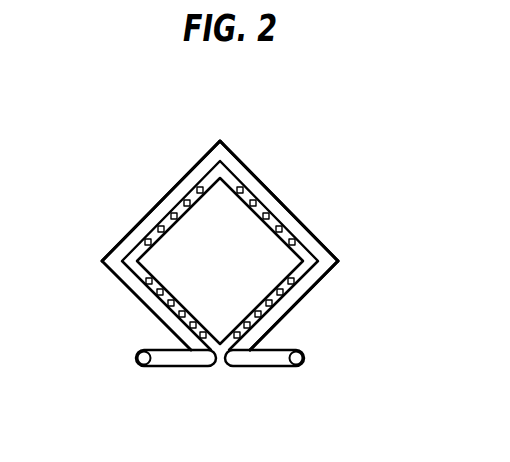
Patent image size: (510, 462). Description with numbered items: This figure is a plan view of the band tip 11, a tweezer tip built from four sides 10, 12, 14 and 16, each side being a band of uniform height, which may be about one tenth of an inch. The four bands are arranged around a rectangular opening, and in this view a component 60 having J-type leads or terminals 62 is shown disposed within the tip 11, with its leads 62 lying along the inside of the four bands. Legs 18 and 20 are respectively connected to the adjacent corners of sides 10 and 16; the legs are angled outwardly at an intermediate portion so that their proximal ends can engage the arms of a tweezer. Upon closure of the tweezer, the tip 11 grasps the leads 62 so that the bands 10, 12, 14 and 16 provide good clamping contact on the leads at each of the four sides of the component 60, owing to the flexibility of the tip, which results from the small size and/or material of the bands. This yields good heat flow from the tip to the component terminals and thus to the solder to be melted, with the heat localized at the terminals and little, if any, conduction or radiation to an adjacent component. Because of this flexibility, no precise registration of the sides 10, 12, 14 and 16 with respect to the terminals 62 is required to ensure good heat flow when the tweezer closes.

The side 10 is at (138, 298).
The band tip 11 is at (296, 177).
The side 12 is at (179, 183).
The side 14 is at (297, 213).
The side 16 is at (291, 311).
The leg 18 is at (170, 357).
The leg 20 is at (260, 357).
The component 60 is at (194, 252).
The J-type leads 62 is at (158, 213).